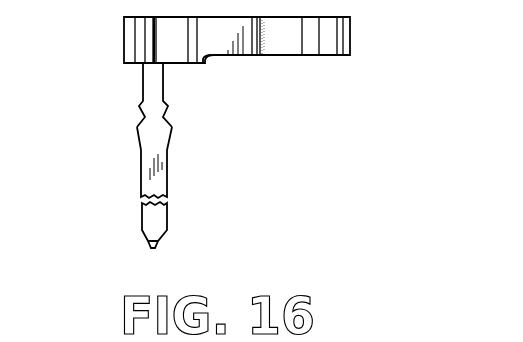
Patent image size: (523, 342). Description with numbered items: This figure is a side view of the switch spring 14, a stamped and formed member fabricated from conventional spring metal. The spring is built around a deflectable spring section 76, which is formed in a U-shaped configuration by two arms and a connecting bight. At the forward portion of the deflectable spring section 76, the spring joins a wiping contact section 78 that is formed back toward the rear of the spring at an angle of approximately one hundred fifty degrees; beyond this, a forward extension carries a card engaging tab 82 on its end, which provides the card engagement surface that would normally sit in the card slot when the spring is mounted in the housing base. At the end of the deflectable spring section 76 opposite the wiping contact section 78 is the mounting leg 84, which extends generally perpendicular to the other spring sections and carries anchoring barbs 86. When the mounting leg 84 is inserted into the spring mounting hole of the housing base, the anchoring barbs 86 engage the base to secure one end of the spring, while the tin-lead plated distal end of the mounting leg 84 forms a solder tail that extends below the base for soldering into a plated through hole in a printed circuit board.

The fastener / screw assembly 14 is at (249, 132).
The deflectable spring section 76 is at (351, 32).
The wiping contact section 78 is at (175, 57).
The card engaging tab 82 is at (122, 38).
The mounting leg 84 is at (142, 162).
The anchoring barbs 86 is at (140, 107).